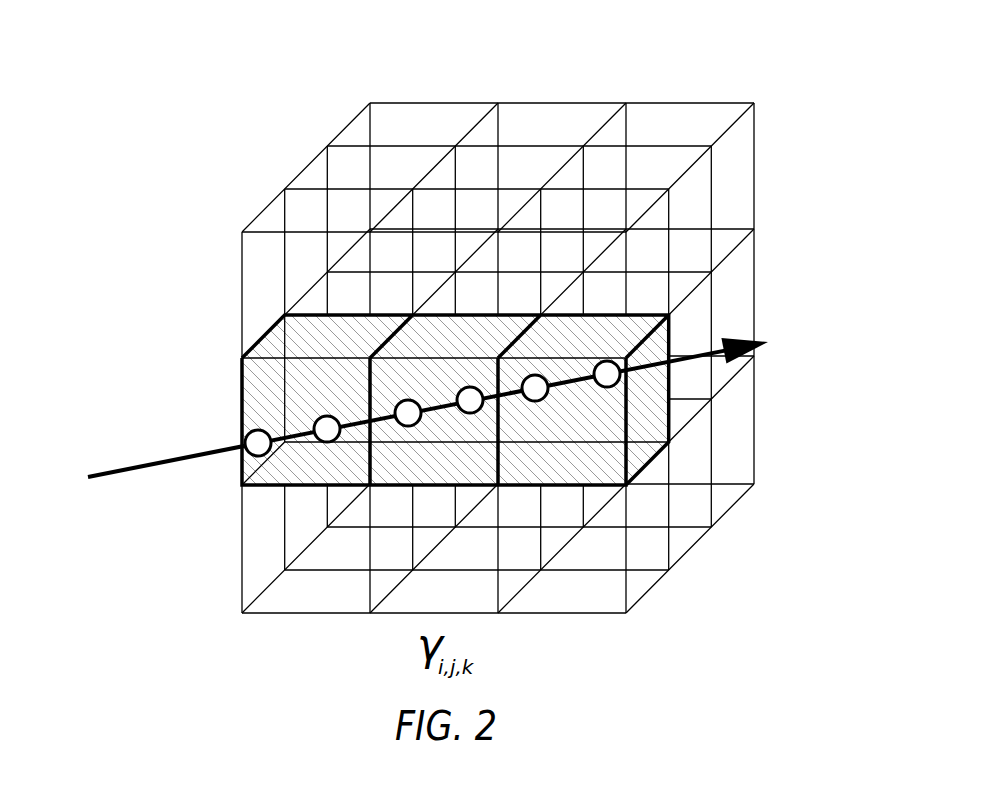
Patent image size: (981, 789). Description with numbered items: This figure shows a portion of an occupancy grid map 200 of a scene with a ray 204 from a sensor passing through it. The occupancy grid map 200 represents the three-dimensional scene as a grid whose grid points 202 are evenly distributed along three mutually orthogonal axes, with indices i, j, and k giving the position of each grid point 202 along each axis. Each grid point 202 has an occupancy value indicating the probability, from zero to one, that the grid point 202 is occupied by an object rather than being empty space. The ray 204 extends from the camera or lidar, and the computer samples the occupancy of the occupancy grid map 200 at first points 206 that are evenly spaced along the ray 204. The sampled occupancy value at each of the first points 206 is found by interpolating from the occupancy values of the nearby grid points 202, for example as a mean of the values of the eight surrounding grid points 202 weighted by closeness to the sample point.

The occupancy grid map 200 is at (697, 75).
The grid point 202 is at (541, 443).
The ray 204 is at (142, 462).
The first points 206 is at (408, 426).